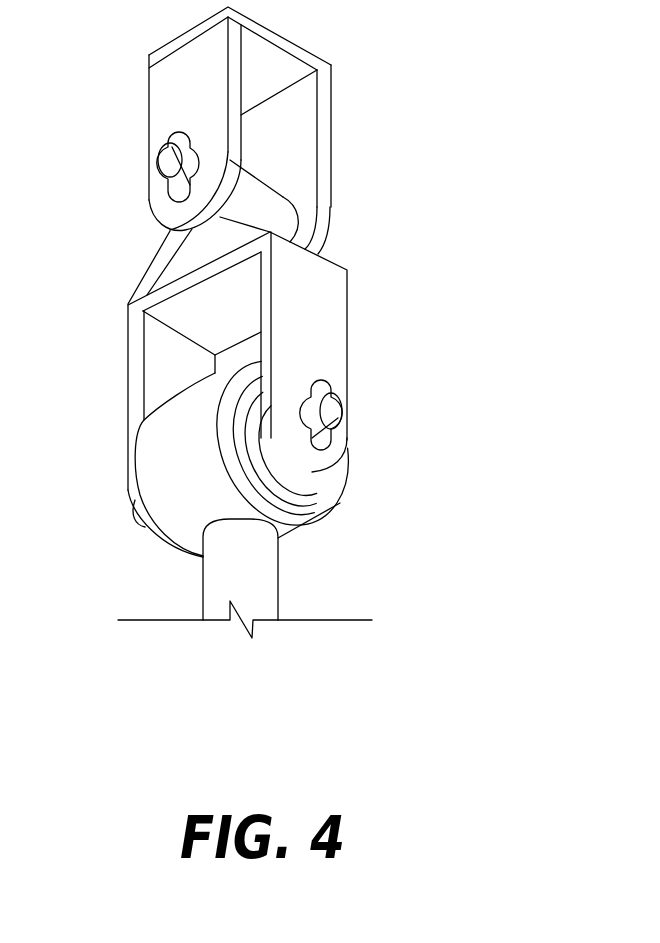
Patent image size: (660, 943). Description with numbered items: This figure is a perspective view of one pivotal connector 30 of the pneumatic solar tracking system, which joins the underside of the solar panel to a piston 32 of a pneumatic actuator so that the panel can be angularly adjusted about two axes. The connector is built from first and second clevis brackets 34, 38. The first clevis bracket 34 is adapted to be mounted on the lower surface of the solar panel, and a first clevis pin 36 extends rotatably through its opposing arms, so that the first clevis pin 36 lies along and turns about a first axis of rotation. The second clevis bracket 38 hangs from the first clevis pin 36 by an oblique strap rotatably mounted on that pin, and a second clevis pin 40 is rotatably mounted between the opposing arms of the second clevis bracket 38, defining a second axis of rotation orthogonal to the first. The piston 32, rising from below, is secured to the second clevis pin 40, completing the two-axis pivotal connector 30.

The pivotal connector 30 is at (528, 103).
The piston 32 is at (253, 593).
The first clevis bracket 34 is at (180, 118).
The first clevis pin 36 is at (283, 184).
The second clevis bracket 38 is at (325, 355).
The second clevis pin 40 is at (330, 463).